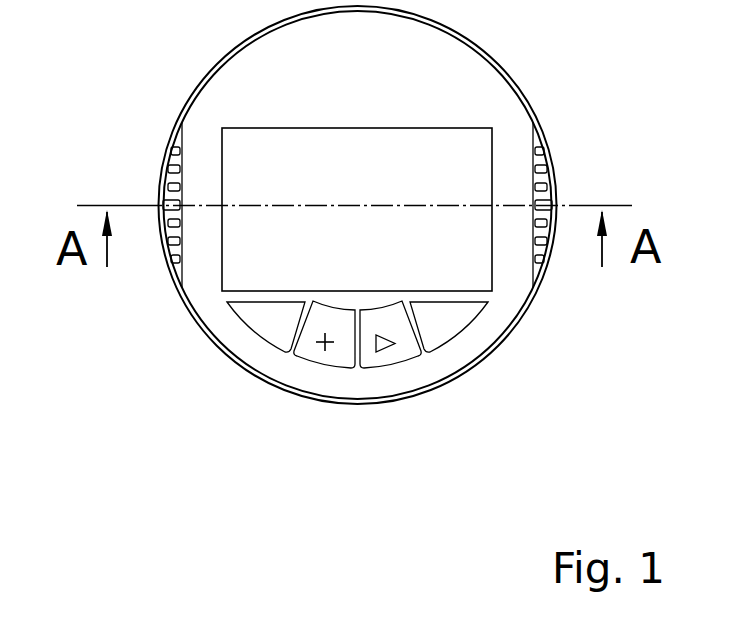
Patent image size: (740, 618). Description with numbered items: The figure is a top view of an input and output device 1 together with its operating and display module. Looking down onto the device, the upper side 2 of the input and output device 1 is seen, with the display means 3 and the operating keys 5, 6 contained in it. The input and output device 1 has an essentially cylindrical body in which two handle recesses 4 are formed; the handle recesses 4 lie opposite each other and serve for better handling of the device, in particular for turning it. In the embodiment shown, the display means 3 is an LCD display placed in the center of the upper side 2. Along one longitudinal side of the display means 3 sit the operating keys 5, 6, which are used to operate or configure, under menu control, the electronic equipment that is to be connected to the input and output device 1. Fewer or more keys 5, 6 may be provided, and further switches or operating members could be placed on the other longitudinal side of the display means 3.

The input and output device 1 is at (522, 70).
The upper side 2 is at (247, 82).
The display means 3 is at (238, 270).
The handle recesses 4 is at (173, 248).
The operating keys 5 is at (315, 355).
The operating keys 6 is at (400, 352).